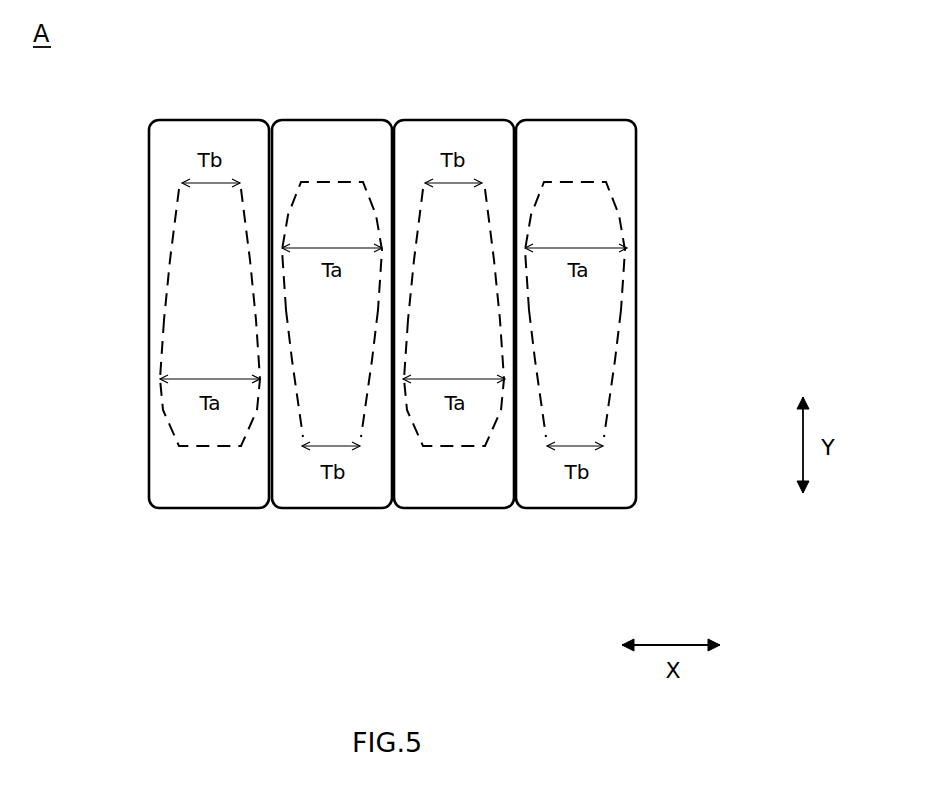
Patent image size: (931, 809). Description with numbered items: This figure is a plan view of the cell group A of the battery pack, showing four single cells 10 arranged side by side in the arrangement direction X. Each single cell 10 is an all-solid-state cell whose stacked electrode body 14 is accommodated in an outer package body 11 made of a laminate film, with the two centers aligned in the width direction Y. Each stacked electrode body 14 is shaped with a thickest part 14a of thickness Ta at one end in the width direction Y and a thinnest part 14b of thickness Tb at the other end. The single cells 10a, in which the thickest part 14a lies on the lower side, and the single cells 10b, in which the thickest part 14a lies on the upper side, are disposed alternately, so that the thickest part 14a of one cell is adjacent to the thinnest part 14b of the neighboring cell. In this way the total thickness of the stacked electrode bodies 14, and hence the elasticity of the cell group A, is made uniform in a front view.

The single cell 10 is at (392, 275).
The single cell 10a is at (202, 119).
The single cell 10b is at (323, 119).
The outer package body 11 is at (217, 508).
The stacked electrode body 14 is at (393, 314).
The thickest part 14a is at (167, 415).
The thinnest part 14b is at (177, 220).